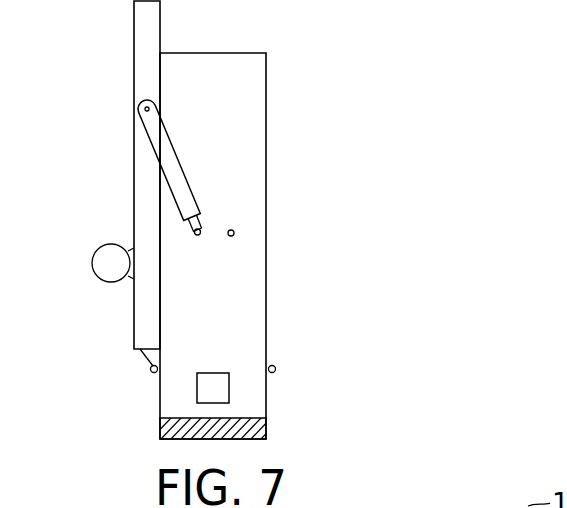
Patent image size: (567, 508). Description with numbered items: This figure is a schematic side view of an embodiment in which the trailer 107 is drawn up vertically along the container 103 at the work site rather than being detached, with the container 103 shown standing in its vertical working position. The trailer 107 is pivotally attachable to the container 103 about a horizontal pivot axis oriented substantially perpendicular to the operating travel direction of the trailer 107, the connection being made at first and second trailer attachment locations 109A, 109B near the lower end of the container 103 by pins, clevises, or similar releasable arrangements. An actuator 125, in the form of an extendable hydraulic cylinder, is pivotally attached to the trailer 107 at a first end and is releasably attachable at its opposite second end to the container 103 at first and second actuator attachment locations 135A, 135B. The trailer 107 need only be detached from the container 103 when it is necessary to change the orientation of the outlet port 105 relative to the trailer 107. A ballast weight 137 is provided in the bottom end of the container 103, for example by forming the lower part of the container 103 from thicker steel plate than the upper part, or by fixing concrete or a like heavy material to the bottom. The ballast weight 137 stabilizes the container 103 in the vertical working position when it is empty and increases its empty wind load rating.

The container 103 is at (254, 53).
The outlet port 105 is at (229, 403).
The trailer 107 is at (134, 180).
The first trailer attachment location 109A is at (150, 378).
The second trailer attachment location 109B is at (277, 366).
The actuator 125 is at (182, 172).
The first actuator attachment location 135A is at (203, 228).
The second actuator attachment location 135B is at (234, 232).
The ballast weight 137 is at (161, 432).